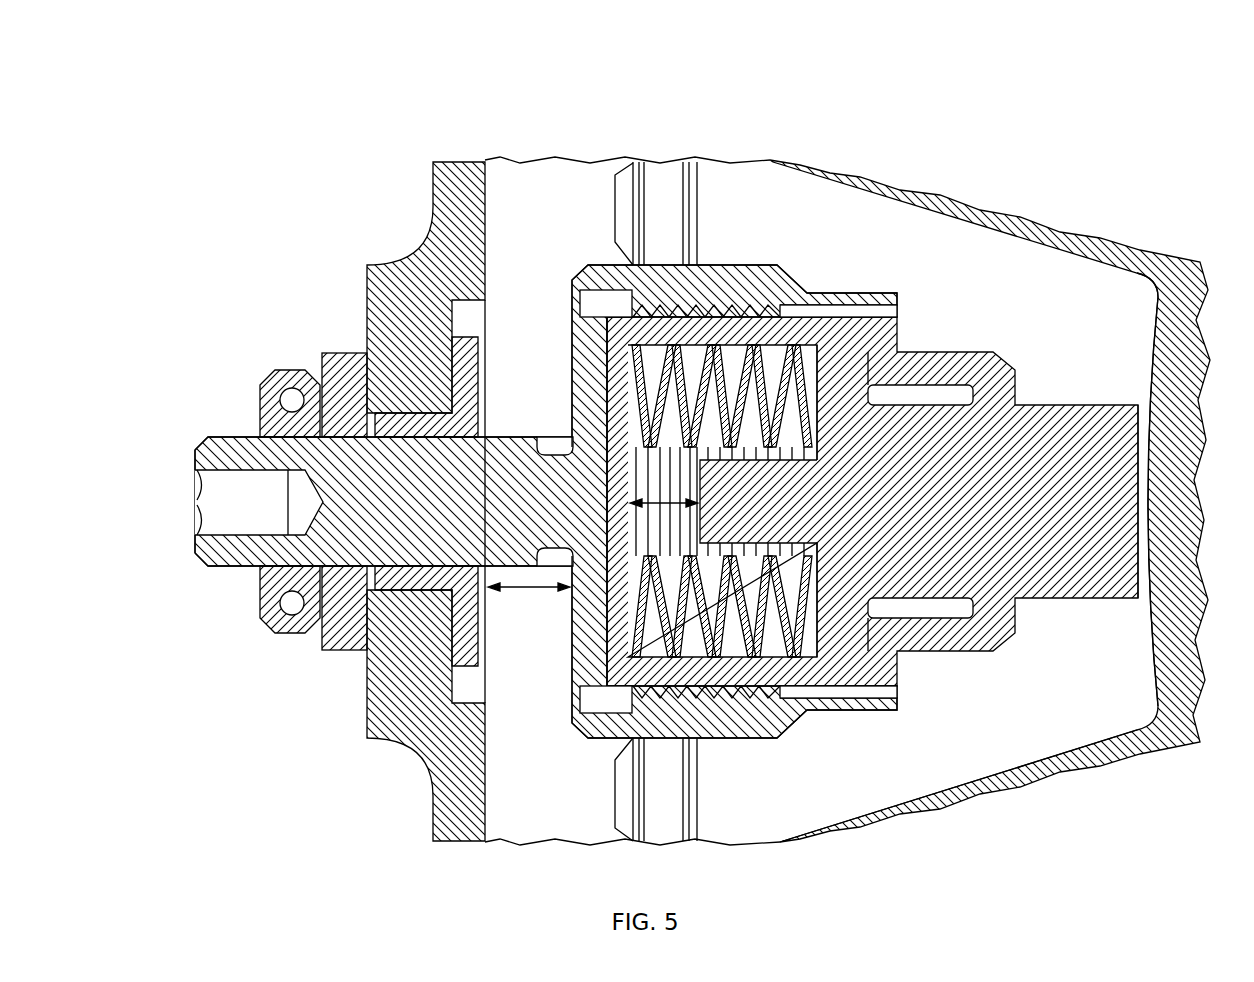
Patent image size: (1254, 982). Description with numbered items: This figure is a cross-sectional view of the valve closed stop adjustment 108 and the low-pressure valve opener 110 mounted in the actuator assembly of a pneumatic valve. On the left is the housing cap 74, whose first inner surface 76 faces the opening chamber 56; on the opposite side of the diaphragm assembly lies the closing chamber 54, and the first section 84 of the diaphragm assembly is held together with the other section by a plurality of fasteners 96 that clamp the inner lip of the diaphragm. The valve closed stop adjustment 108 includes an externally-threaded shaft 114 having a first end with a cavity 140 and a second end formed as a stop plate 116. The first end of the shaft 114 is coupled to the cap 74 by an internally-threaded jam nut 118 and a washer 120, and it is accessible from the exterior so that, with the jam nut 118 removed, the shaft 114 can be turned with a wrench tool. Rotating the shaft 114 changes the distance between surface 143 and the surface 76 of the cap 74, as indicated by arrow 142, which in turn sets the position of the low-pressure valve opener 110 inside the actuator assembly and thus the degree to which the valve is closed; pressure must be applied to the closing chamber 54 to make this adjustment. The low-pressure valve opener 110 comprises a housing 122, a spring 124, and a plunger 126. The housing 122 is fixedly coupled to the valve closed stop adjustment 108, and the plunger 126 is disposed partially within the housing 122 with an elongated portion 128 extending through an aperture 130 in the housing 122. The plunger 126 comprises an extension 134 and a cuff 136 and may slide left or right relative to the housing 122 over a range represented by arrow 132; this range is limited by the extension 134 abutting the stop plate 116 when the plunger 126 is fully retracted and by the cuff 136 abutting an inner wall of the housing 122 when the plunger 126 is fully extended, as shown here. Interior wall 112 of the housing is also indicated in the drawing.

The closing chamber 54 is at (811, 242).
The opening chamber 56 is at (546, 248).
The housing cap 74 is at (440, 775).
The first inner surface 76 is at (487, 785).
The first section 84 is at (1062, 753).
The fasteners 96 is at (617, 200).
The valve closed stop adjustment 108 is at (407, 530).
The low-pressure valve opener 110 is at (1124, 163).
The housing interior wall 112 is at (982, 298).
The externally-threaded shaft 114 is at (235, 547).
The stop plate 116 is at (606, 402).
The internally-threaded jam nut 118 is at (262, 398).
The washer 120 is at (358, 353).
The housing 122 is at (1014, 392).
The spring 124 is at (745, 640).
The plunger 126 is at (971, 515).
The elongated portion 128 is at (1133, 480).
The aperture 130 is at (1016, 606).
The arrow 132 is at (650, 503).
The extension 134 is at (770, 512).
The cuff 136 is at (833, 648).
The cavity 140 is at (213, 500).
The arrow 142 is at (534, 590).
The surface 143 is at (572, 692).